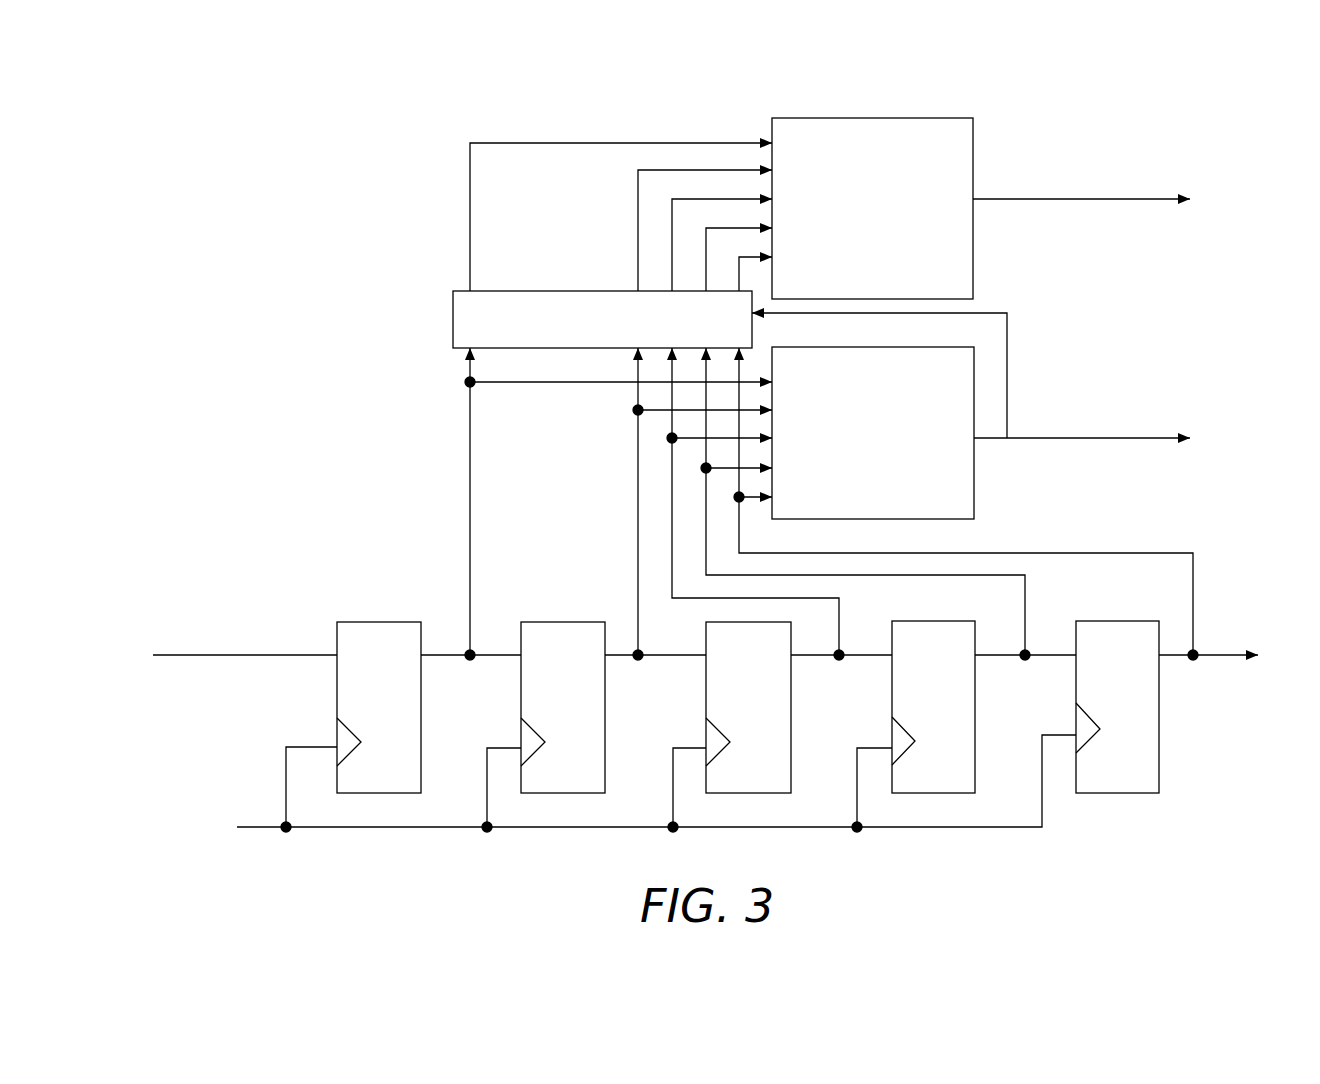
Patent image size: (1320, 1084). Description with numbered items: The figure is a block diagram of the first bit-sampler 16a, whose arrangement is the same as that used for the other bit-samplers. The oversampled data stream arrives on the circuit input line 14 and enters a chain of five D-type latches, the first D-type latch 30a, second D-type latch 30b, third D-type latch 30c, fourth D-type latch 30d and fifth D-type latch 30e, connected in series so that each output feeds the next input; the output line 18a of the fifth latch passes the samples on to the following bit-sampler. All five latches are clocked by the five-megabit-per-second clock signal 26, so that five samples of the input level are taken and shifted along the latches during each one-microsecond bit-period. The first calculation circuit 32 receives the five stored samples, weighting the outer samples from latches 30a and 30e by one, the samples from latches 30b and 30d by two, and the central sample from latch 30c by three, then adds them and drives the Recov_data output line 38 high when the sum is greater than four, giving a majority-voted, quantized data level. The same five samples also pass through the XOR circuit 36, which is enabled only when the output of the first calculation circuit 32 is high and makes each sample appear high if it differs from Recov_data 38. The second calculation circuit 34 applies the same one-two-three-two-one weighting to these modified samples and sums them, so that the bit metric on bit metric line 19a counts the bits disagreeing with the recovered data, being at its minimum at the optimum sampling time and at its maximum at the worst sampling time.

The first bit-sampler 16a is at (370, 170).
The circuit input line 14 is at (173, 655).
The output line 18a is at (1224, 655).
The clock signal 26 is at (265, 827).
The first D-type latch 30a is at (378, 622).
The second D-type latch 30b is at (570, 622).
The third D-type latch 30c is at (791, 716).
The fourth D-type latch 30d is at (975, 718).
The fifth D-type latch 30e is at (1159, 714).
The Exclusive-OR (XOR) circuit 36 is at (453, 318).
The second calculation circuit 34 is at (862, 118).
The bit metric line 19a is at (1073, 199).
The first calculation circuit 32 is at (974, 490).
The Recov_data output line 38 is at (1085, 438).